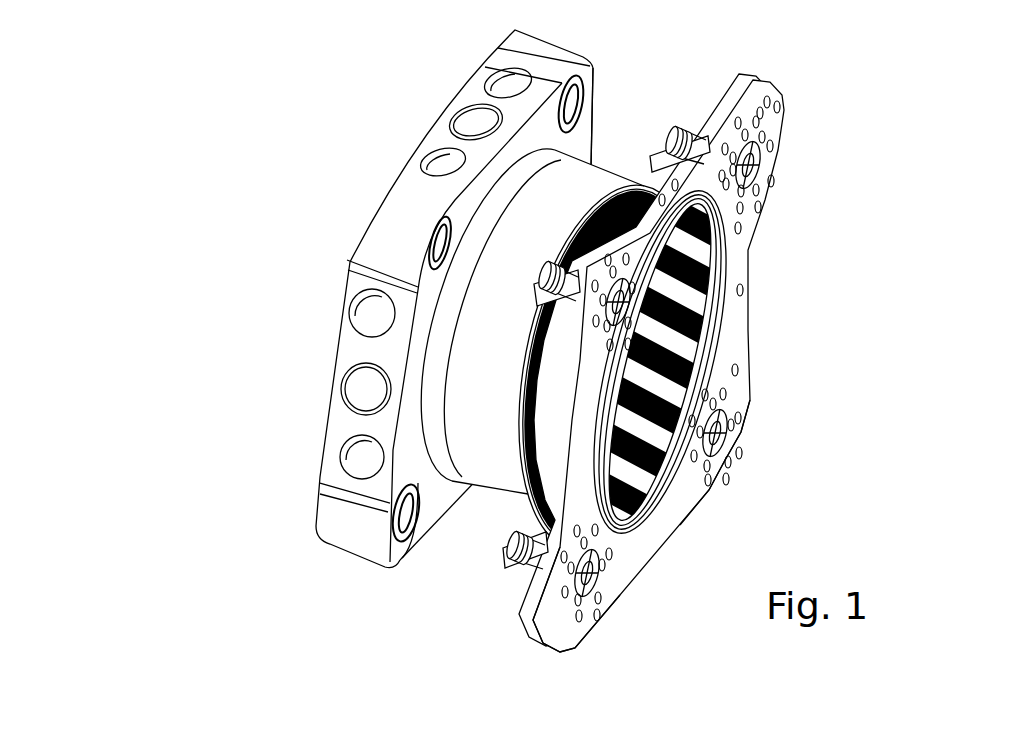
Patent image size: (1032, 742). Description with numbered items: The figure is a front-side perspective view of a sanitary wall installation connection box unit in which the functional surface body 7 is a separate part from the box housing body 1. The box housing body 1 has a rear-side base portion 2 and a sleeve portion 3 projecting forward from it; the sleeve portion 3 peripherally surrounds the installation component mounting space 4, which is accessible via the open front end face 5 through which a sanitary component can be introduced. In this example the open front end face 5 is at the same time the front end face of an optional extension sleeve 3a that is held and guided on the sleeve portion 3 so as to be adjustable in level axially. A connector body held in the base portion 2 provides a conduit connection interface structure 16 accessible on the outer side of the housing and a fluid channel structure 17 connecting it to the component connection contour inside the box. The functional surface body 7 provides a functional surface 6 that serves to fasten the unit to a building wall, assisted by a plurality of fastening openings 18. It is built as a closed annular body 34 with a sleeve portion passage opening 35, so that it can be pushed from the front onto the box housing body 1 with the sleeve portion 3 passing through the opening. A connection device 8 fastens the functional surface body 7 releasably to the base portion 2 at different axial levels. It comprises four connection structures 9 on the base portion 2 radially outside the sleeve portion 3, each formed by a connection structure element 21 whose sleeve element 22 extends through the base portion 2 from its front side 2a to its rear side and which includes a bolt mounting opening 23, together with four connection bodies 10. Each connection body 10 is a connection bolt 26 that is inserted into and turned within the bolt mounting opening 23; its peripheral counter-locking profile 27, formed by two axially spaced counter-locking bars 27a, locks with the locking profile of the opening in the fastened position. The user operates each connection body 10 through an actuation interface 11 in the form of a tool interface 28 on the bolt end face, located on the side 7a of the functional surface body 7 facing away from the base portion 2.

The box housing body 1 is at (544, 153).
The base portion 2 is at (448, 325).
The front side 2a is at (580, 127).
The sleeve portion 3 is at (490, 472).
The extension sleeve 3a is at (550, 493).
The installation component mounting space 4 is at (653, 397).
The open front end face 5 is at (650, 499).
The functional surface 6 is at (580, 607).
The functional surface body 7 is at (697, 398).
The side of the functional surface body 7a is at (723, 461).
The connection device 8 is at (412, 533).
The connection structure 9 is at (448, 325).
The connection body 10 is at (703, 143).
The actuation interface 11 is at (699, 431).
The conduit connection interface structure 16 is at (390, 263).
The fluid channel structure 17 is at (463, 125).
The fastening openings 18 is at (750, 222).
The connection structure element 21 is at (448, 325).
The sleeve element 22 is at (578, 85).
The bolt mounting opening 23 is at (444, 325).
The connection bolt 26 is at (666, 352).
The counter-locking profile 27 is at (595, 313).
The counter-locking bars 27a is at (690, 128).
The tool interface 28 is at (620, 308).
The annular body 34 is at (745, 317).
The sleeve portion passage opening 35 is at (660, 503).